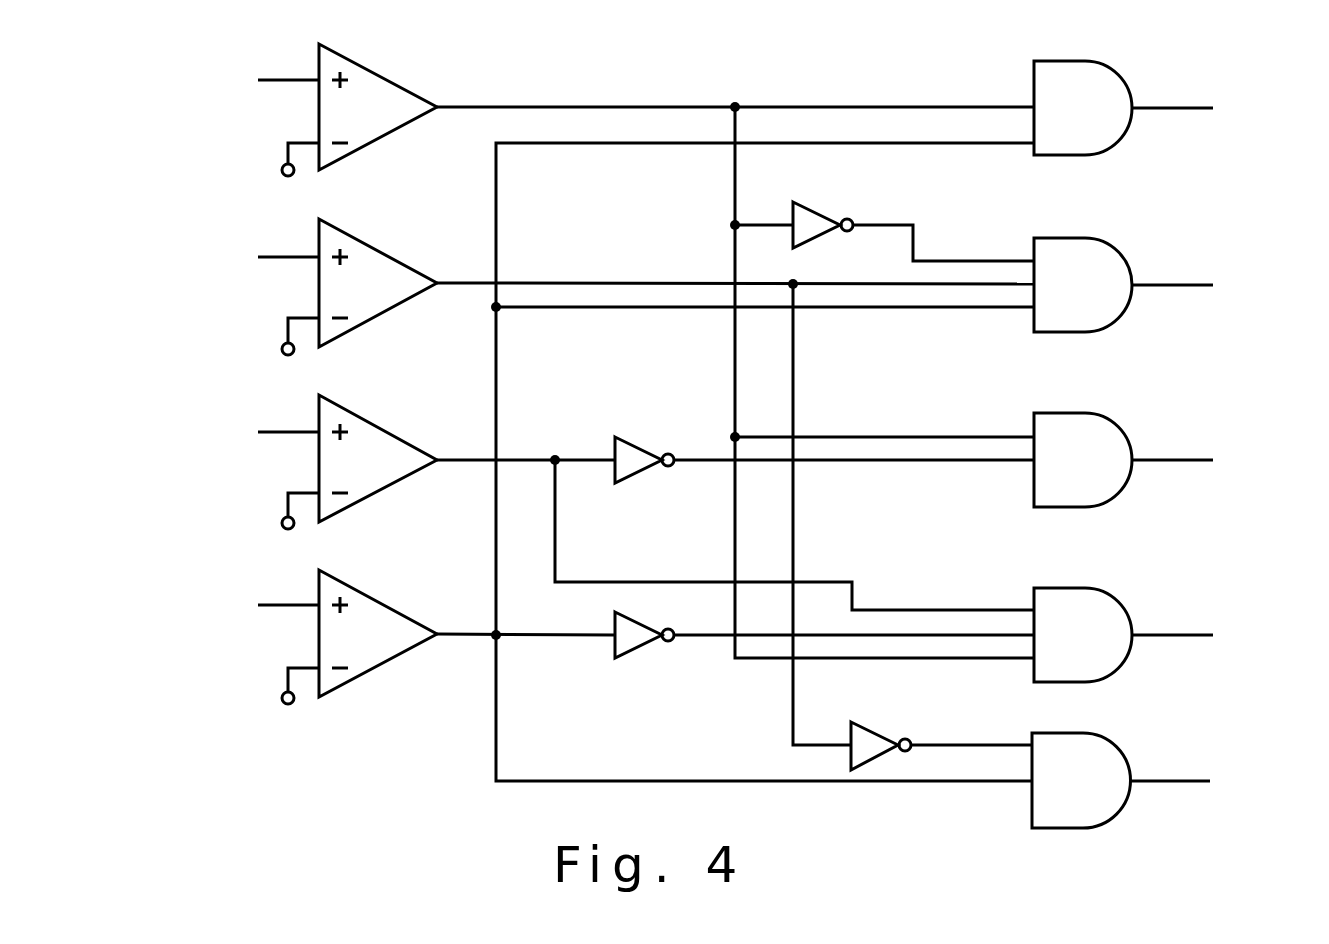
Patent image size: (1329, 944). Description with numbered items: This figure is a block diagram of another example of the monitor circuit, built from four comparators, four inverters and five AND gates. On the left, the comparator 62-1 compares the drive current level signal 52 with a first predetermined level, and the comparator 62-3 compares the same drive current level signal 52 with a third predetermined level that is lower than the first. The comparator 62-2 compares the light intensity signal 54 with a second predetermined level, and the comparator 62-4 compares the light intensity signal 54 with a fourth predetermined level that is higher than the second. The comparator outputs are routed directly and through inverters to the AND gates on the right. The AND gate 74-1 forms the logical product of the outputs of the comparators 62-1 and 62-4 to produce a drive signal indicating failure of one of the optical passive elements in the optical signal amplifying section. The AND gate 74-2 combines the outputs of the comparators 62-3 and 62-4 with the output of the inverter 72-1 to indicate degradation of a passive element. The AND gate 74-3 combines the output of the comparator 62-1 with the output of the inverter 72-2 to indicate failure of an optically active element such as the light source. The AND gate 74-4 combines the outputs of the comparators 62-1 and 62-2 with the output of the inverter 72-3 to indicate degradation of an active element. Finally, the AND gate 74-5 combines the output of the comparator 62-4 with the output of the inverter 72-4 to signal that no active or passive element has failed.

The drive current level signal 52 is at (207, 169).
The light intensity signal 54 is at (203, 519).
The comparator 62-1 is at (377, 142).
The comparator 62-2 is at (383, 492).
The comparator 62-3 is at (381, 315).
The comparator 62-4 is at (383, 666).
The inverter 72-1 is at (807, 203).
The inverter 72-2 is at (640, 472).
The inverter 72-3 is at (637, 650).
The inverter 72-4 is at (867, 724).
The AND gate 74-1 is at (1127, 87).
The AND gate 74-2 is at (1127, 264).
The AND gate 74-3 is at (1127, 439).
The AND gate 74-4 is at (1127, 614).
The AND gate 74-5 is at (1125, 760).